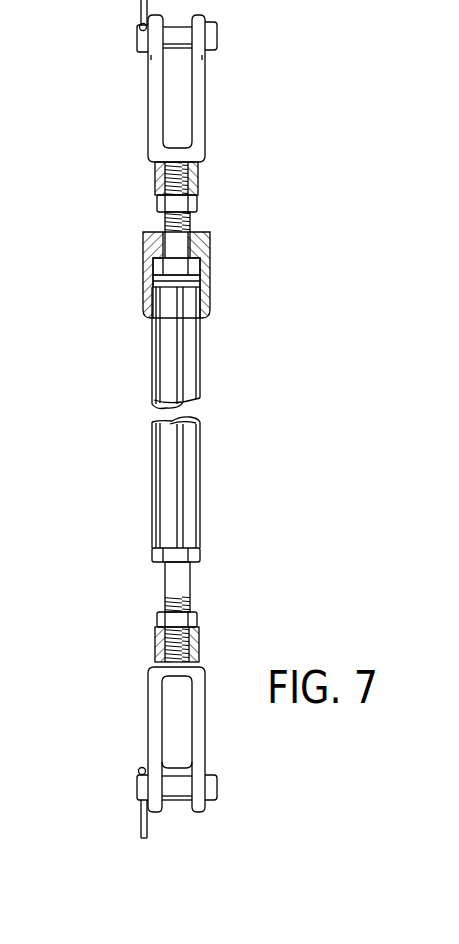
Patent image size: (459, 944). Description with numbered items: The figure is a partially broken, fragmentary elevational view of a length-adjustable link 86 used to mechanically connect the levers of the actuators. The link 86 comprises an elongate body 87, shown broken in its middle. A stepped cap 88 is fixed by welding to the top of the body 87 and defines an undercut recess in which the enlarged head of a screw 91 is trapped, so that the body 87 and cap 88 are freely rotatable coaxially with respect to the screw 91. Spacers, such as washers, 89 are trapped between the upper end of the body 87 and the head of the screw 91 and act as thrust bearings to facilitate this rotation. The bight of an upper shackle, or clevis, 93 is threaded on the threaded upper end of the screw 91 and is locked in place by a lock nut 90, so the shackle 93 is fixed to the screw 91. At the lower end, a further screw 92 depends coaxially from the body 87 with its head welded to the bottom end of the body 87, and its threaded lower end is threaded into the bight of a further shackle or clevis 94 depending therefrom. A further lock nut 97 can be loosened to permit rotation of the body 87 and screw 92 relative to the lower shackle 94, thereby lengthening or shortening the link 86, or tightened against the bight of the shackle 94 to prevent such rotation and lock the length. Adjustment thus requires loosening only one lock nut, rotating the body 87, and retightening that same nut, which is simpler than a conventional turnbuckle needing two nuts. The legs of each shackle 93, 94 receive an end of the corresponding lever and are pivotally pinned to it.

The link 86 is at (106, 417).
The elongate body 87 is at (163, 354).
The stepped cap 88 is at (210, 241).
The spacers 89 is at (198, 284).
The lock nut 90 is at (158, 203).
The screw 91 is at (182, 240).
The further screw 92 is at (173, 580).
The shackle 93 is at (205, 97).
The further shackle 94 is at (157, 705).
The further lock nut 97 is at (198, 618).